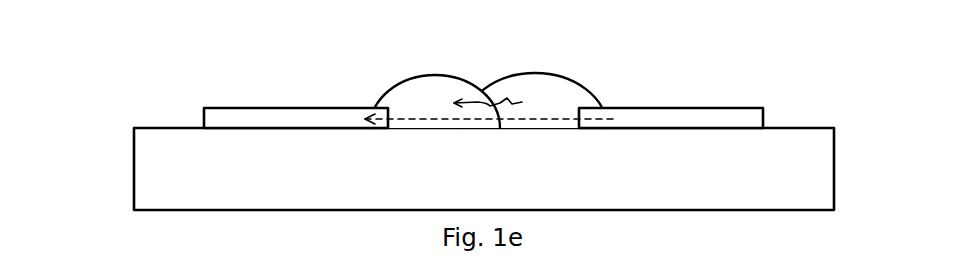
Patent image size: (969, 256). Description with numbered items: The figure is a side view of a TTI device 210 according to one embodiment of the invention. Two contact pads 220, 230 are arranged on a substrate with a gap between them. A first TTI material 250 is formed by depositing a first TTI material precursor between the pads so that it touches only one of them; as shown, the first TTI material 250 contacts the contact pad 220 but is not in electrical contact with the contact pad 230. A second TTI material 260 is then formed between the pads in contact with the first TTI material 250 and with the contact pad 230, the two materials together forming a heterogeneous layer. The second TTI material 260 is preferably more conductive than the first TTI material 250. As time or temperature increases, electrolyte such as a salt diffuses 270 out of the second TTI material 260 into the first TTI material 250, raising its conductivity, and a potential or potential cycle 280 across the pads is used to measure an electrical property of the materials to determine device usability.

The electrowetting device 210 is at (102, 88).
The contact pad 220 is at (228, 120).
The contact pad 230 is at (752, 117).
The first TTI material 250 is at (375, 97).
The second TTI material 260 is at (582, 83).
The electrolyte diffusion 270 is at (497, 95).
The potential or potential cycle 280 is at (558, 120).